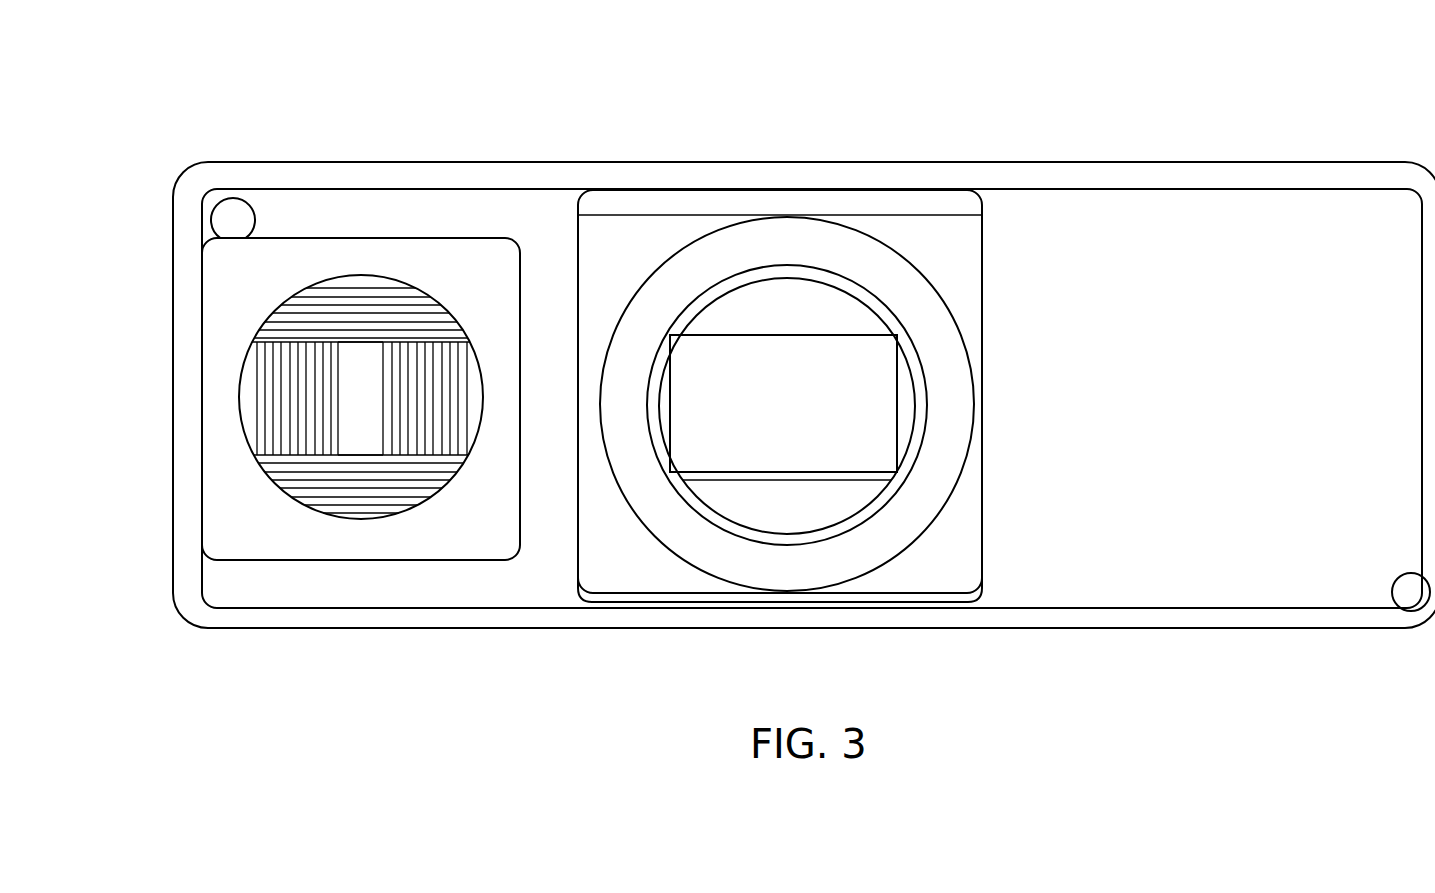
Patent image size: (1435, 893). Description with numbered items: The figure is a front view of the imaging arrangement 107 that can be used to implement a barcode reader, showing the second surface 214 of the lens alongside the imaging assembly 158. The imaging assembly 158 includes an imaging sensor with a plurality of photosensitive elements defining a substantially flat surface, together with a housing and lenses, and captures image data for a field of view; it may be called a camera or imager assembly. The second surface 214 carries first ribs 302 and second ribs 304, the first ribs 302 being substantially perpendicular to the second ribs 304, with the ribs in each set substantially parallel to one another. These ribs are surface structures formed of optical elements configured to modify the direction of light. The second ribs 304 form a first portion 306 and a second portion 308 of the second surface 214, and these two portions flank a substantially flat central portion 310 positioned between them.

The imaging arrangement 107 is at (170, 80).
The second surface 214 is at (298, 497).
The first ribs 302 is at (360, 495).
The second ribs 304 is at (256, 416).
The first portion 306 is at (450, 370).
The second portion 308 is at (248, 372).
The central portion 310 is at (352, 388).
The imaging assembly 158 is at (755, 497).